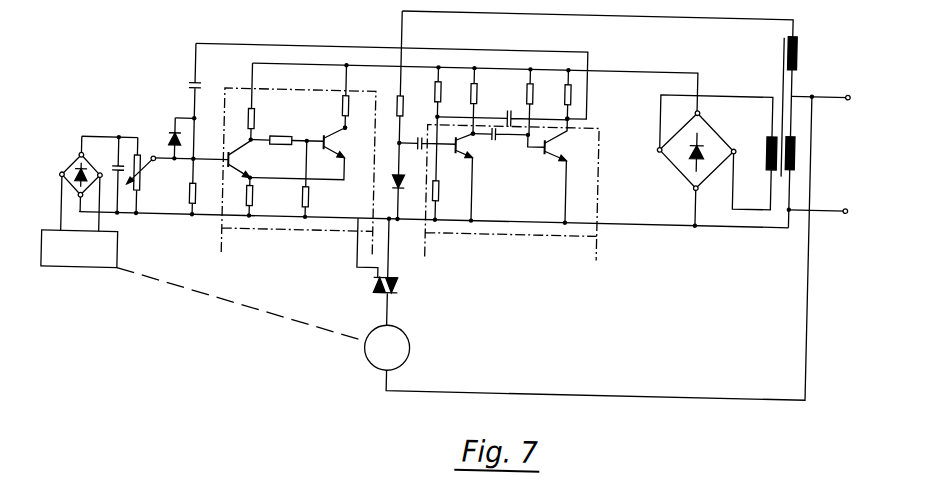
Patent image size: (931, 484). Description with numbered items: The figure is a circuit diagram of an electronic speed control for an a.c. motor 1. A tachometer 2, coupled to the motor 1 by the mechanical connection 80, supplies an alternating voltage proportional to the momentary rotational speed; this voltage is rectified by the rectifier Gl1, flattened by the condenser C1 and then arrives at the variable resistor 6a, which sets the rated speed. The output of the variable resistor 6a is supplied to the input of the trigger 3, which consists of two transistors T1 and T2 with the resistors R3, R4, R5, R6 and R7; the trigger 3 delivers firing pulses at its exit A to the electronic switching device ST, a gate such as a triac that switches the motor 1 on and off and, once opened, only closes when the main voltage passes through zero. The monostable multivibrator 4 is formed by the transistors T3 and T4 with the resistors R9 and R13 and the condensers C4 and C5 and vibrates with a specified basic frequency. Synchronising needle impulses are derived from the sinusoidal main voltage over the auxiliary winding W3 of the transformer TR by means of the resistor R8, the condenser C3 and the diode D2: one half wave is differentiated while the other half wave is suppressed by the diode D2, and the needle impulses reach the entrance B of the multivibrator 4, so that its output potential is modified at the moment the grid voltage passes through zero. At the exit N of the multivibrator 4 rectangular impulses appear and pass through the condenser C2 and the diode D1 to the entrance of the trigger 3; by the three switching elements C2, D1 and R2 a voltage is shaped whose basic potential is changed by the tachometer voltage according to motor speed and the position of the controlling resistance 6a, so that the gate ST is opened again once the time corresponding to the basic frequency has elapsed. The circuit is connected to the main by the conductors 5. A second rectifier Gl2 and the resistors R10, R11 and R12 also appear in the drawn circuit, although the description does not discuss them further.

The a.c. motor 1 is at (409, 333).
The tachometer 2 is at (118, 249).
The trigger 3 is at (373, 251).
The monostable multivibrator 4 is at (597, 251).
The conductors 5 is at (825, 154).
The variable resistor 6a is at (141, 193).
The mechanical connection 80 is at (240, 306).
The rectifier Gl1 is at (76, 184).
The rectifier bridge Gl2 is at (710, 162).
The condenser C1 is at (113, 175).
The condenser C2 is at (182, 102).
The condenser C3 is at (427, 153).
The condenser C4 is at (500, 147).
The condenser C5 is at (502, 115).
The diode D1 is at (173, 138).
The diode D2 is at (391, 181).
The resistor R2 is at (204, 188).
The resistor R3 is at (261, 198).
The resistor R4 is at (317, 180).
The resistor R5 is at (263, 102).
The resistor R6 is at (288, 129).
The resistor R7 is at (356, 95).
The resistor R8 is at (412, 78).
The resistor R9 is at (450, 92).
The resistor R10 is at (490, 100).
The resistor R11 is at (545, 101).
The resistor R12 is at (583, 95).
The resistor R13 is at (450, 170).
The transistor T1 is at (286, 161).
The transistor T2 is at (338, 141).
The transistor T3 is at (466, 177).
The transistor T4 is at (549, 171).
The trigger exit A is at (361, 122).
The multivibrator entrance B is at (459, 130).
The multivibrator exit N is at (576, 120).
The electronic switching device ST is at (400, 271).
The transformer TR is at (780, 147).
The auxiliary winding W3 is at (824, 54).